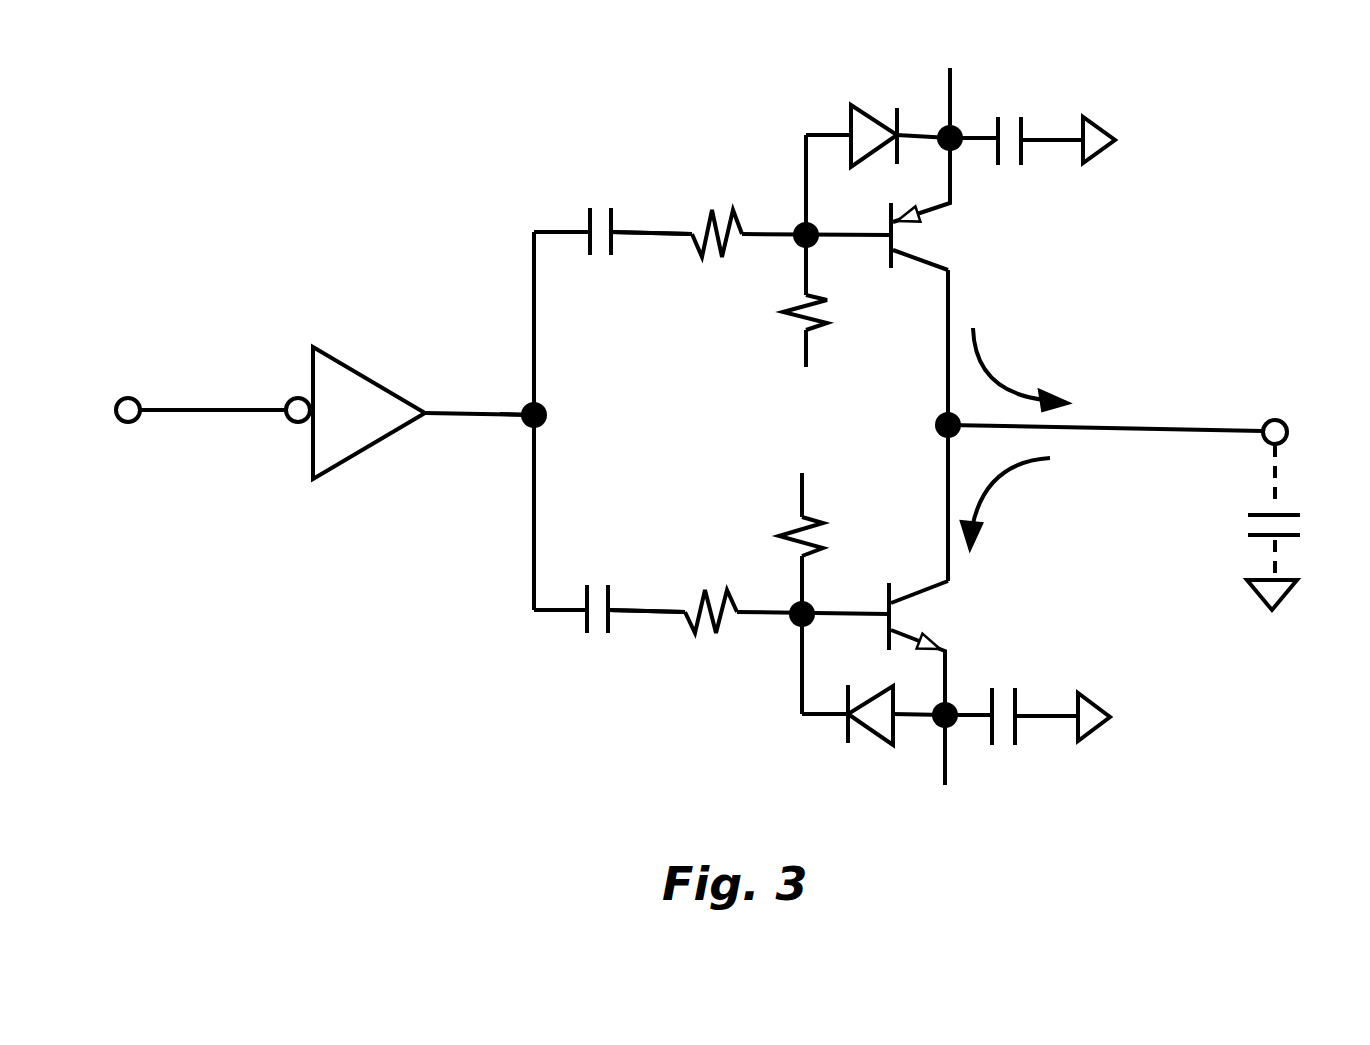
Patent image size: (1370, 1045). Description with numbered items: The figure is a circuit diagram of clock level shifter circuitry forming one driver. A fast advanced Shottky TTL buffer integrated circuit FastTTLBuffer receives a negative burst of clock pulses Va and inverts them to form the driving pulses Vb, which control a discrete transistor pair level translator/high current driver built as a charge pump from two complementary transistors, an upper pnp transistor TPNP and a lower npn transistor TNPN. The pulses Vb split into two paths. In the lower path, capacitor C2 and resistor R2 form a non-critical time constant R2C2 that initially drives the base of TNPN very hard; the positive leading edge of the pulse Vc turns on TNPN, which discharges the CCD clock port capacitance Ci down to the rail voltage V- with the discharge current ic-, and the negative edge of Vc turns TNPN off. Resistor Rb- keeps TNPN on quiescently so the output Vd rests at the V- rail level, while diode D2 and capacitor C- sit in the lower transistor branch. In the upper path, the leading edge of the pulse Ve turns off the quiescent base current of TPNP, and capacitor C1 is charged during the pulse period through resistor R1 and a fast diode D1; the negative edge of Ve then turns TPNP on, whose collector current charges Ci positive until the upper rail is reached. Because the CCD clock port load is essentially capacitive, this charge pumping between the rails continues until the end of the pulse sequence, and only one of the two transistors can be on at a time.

The negative burst of clock pulses Va is at (175, 397).
The fast advanced Shottky TTL buffer integrated circuit FastTTLBuffer is at (355, 449).
The driving pulses Vb is at (494, 394).
The capacitor C1 is at (598, 213).
The pulse Ve is at (651, 253).
The resistor R1 is at (717, 216).
The DC rail voltage V- is at (875, 576).
The fast diode D1 is at (874, 121).
The pnp transistor TPNP is at (942, 204).
The npn transistor TNPN is at (940, 648).
The discharge current ic- is at (1006, 503).
The output Vd is at (1256, 420).
The CCD clock port capacitance Ci is at (1290, 527).
The capacitor C2 is at (593, 592).
The pulse Vc is at (646, 632).
The resistor R2 is at (711, 594).
The resistor Rb- is at (822, 543).
The diode D2 is at (870, 741).
The capacitor C- is at (1006, 740).